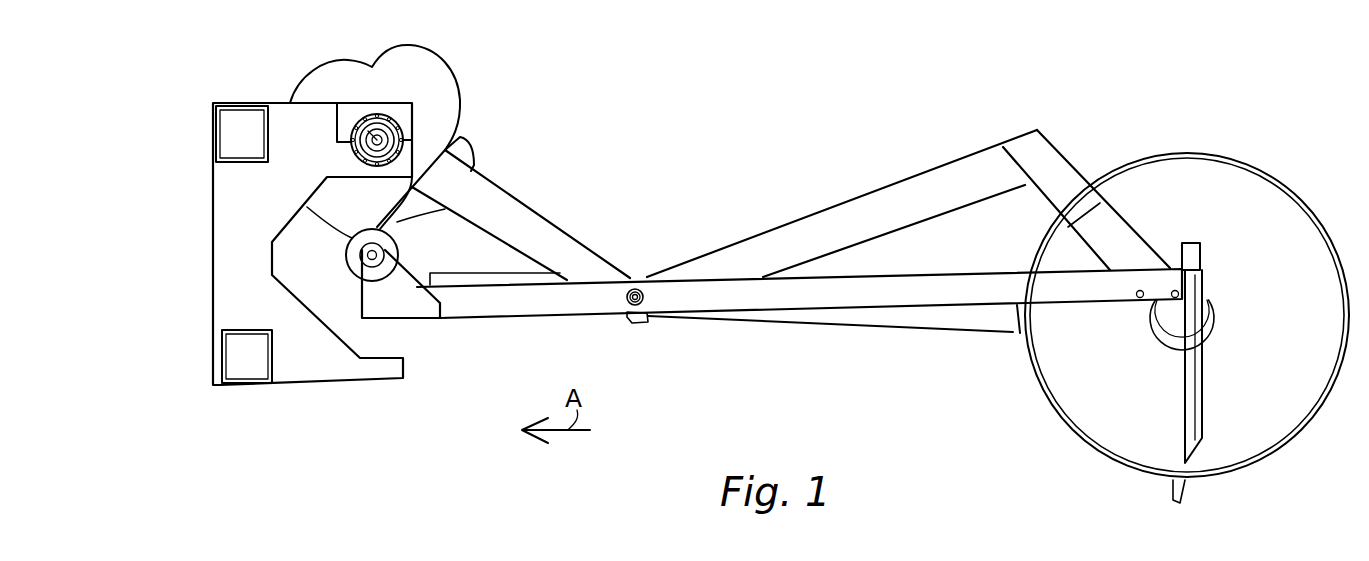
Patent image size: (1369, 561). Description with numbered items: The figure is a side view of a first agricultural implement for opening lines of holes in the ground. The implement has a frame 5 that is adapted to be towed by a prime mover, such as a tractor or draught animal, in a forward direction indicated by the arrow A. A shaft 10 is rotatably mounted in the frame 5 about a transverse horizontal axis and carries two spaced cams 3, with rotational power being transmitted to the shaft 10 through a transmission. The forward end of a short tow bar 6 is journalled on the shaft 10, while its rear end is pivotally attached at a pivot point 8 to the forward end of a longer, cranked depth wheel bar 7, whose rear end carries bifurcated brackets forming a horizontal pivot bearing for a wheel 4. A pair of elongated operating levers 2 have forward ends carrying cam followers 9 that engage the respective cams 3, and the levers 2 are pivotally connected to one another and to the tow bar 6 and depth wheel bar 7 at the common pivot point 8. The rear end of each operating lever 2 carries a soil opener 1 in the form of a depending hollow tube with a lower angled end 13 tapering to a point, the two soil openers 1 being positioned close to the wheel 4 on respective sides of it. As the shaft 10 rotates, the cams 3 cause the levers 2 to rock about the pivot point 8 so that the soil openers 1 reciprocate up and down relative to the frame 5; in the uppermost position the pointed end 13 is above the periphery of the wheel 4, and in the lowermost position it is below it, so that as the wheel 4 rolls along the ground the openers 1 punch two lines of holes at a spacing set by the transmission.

The soil opener 1 is at (1082, 497).
The operating lever 2 is at (833, 295).
The cam 3 is at (427, 76).
The wheel 4 is at (1255, 203).
The frame 5 is at (227, 205).
The tow bar 6 is at (533, 222).
The depth wheel bar 7 is at (1005, 150).
The pivot point 8 is at (648, 322).
The cam follower 9 is at (403, 238).
The shaft 10 is at (350, 133).
The angled end 13 is at (1183, 430).